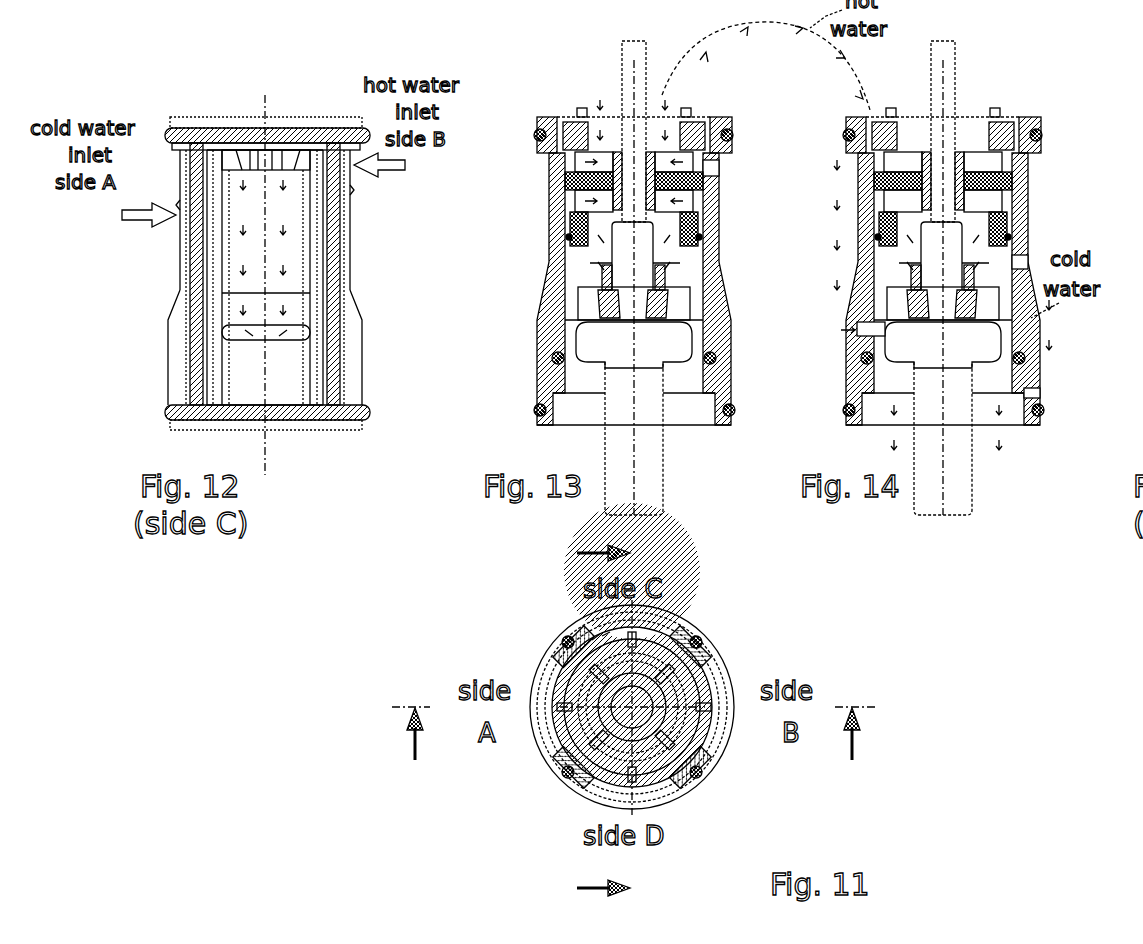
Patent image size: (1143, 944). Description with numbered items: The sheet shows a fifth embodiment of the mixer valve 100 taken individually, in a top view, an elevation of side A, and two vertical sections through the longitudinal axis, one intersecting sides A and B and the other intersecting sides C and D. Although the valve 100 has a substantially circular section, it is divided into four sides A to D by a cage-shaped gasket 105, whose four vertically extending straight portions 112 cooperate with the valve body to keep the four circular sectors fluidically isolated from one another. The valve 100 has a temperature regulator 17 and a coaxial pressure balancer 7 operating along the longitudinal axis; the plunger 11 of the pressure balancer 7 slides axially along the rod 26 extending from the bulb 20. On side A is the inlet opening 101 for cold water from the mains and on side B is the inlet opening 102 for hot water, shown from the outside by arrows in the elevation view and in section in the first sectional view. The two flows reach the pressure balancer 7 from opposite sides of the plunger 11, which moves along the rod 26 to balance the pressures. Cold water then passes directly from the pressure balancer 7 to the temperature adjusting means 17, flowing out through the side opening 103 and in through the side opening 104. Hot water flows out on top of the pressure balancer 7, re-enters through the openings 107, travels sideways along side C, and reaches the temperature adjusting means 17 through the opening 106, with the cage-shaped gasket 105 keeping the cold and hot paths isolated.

In FIG. 13, the pressure balancer 7 is at (706, 264).
In FIG. 13, the plunger 11 is at (704, 208).
In FIG. 14, the plunger 11 is at (908, 184).
In FIG. 13, the temperature regulator 17 is at (680, 344).
In FIG. 13, the bulb 20 is at (654, 457).
In FIG. 13, the rod 26 is at (622, 70).
In FIG. 14, the rod 26 is at (976, 274).
In FIG. 11, the valve 100 is at (556, 786).
In FIG. 12, the inlet opening 101 is at (185, 220).
In FIG. 13, the inlet opening 101 is at (561, 213).
In FIG. 12, the inlet opening 102 is at (350, 172).
In FIG. 13, the inlet opening 102 is at (724, 168).
In FIG. 14, the side opening 103 is at (1054, 235).
In FIG. 14, the side opening 104 is at (1069, 374).
In FIG. 12, the cage-shaped gasket 105 is at (205, 128).
In FIG. 13, the cage-shaped gasket 105 is at (846, 132).
In FIG. 14, the cage-shaped gasket 105 is at (981, 240).
In FIG. 11, the cage-shaped gasket 105 is at (699, 778).
In FIG. 12, the opening 106 is at (298, 338).
In FIG. 14, the opening 106 is at (832, 357).
In FIG. 13, the openings 107 is at (862, 118).
In FIG. 11, the openings 107 is at (592, 640).
In FIG. 12, the straight portions 112 is at (338, 252).
In FIG. 11, the straight portions 112 is at (702, 640).